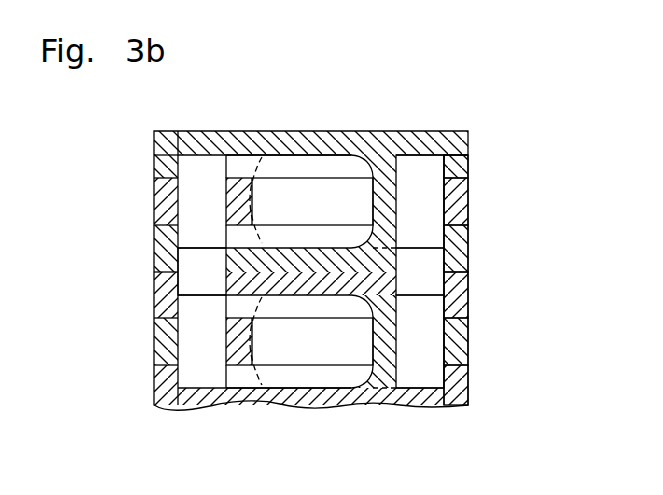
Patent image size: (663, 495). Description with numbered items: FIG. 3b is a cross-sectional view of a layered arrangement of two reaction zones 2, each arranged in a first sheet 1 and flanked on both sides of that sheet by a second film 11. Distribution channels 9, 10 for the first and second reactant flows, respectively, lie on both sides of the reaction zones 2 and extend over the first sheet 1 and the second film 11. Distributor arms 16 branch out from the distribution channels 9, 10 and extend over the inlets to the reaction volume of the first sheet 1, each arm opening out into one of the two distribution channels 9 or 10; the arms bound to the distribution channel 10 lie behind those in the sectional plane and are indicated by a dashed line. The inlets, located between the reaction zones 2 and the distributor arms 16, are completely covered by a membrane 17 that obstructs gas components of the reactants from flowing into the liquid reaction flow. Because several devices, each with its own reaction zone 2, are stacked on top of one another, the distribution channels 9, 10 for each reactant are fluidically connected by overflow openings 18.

The first sheet 1 is at (455, 203).
The reaction zone 2 is at (297, 209).
The distribution channel 9 is at (195, 209).
The distribution channel 10 is at (406, 207).
The second film 11 is at (455, 162).
The distributor arm 16 is at (325, 237).
The membrane 17 is at (283, 225).
The overflow opening 18 is at (190, 263).